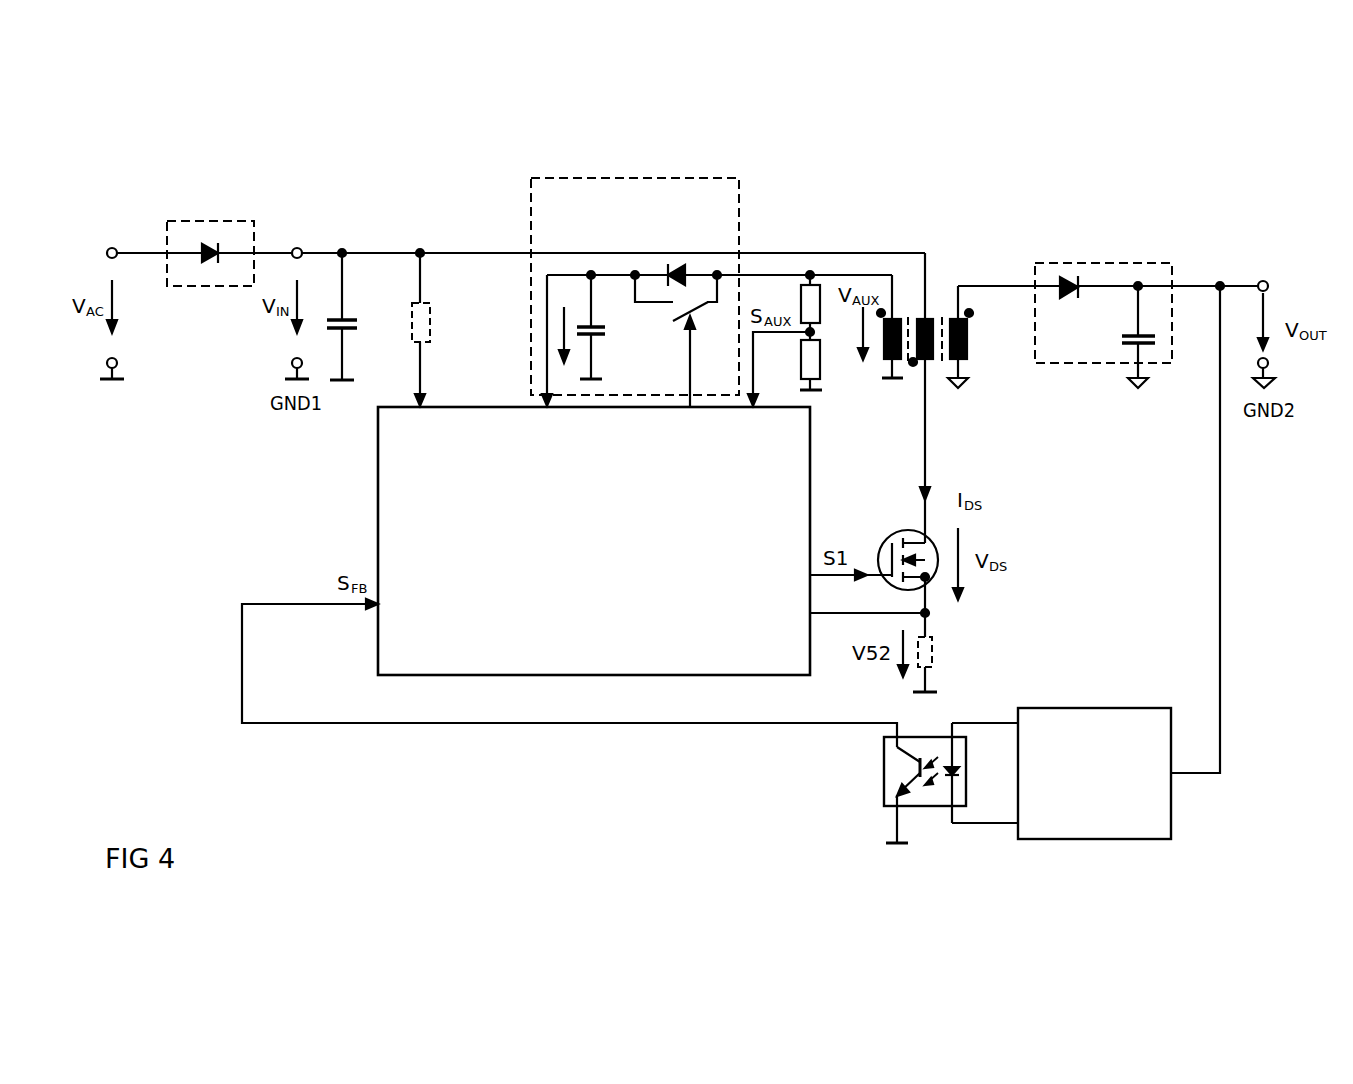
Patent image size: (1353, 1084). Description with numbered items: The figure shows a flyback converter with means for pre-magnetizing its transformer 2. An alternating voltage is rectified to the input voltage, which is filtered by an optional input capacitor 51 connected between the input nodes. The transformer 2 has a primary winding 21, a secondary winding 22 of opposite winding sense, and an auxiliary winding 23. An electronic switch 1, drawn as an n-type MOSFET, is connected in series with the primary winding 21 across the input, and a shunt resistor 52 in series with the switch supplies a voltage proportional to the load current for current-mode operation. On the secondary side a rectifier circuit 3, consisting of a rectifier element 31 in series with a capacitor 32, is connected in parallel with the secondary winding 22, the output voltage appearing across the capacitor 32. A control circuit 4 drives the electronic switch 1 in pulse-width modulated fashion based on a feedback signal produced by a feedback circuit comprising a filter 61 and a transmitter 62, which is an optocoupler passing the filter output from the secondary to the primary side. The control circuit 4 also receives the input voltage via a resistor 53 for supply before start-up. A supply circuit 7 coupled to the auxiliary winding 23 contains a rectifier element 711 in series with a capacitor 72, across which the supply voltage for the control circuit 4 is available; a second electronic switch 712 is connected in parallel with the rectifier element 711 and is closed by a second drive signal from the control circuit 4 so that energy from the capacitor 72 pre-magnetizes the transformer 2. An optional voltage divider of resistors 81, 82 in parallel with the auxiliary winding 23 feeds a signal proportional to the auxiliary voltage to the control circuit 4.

The electronic switch 1 is at (883, 537).
The transformer 2 is at (938, 385).
The primary winding 21 is at (918, 317).
The secondary winding 22 is at (967, 352).
The auxiliary winding 23 is at (882, 360).
The rectifier circuit 3 is at (1103, 297).
The rectifier element 31 is at (1073, 303).
The capacitor 32 is at (1123, 335).
The control circuit 4 is at (377, 508).
The input capacitor 51 is at (363, 326).
The shunt resistor 52 is at (938, 657).
The resistor 53 is at (433, 326).
The filter 61 is at (1103, 707).
The transmitter 62 is at (882, 777).
The supply circuit 7 is at (711, 292).
The rectifier element 711 is at (675, 267).
The second electronic switch 712 is at (676, 305).
The capacitor 72 is at (600, 325).
The resistor 81 is at (793, 297).
The resistor 82 is at (797, 356).